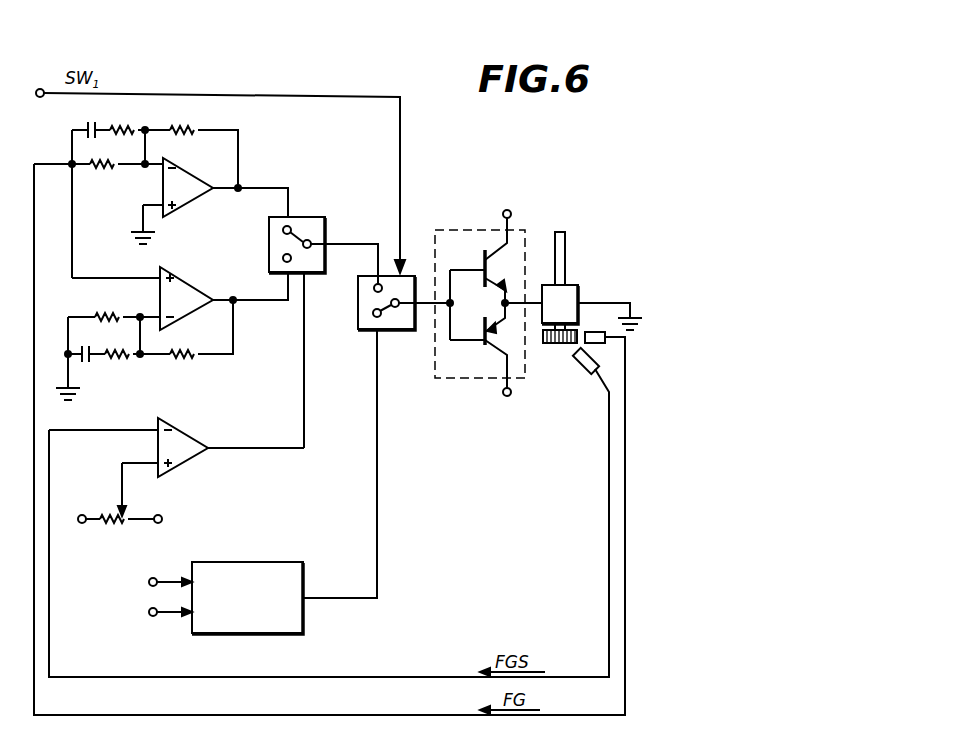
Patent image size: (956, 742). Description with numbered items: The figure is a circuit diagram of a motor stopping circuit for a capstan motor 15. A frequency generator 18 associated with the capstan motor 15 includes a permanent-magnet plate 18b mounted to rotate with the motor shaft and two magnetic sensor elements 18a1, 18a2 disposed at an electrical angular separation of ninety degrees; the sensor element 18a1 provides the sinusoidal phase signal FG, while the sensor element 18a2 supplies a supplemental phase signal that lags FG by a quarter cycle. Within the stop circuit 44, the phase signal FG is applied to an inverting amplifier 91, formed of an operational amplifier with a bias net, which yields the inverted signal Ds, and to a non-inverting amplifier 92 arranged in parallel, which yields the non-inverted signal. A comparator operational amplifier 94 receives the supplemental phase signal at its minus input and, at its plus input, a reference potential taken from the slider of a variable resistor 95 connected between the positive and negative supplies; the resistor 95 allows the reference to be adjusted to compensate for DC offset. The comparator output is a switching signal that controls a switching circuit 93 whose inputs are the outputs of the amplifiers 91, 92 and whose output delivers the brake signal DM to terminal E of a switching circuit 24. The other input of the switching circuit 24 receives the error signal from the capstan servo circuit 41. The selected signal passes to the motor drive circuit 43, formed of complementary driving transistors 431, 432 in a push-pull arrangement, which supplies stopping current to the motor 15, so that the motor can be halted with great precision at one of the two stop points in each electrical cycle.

The stop circuit 44 is at (334, 143).
The inverting amplifier 91 is at (122, 200).
The non-inverting amplifier 92 is at (122, 388).
The switching circuit 93 is at (318, 272).
The comparator operational amplifier 94 is at (190, 465).
The variable resistor 95 is at (114, 524).
The capstan servo circuit 41 is at (304, 622).
The switching circuit 24 is at (402, 330).
The motor drive circuit 43 is at (438, 378).
The driving transistor 431 is at (460, 230).
The driving transistor 432 is at (482, 350).
The capstan motor 15 is at (580, 292).
The frequency generator 18 is at (564, 402).
The magnetic sensor element 18a1 is at (597, 344).
The magnetic sensor element 18a2 is at (583, 372).
The permanent-magnet plate 18b is at (555, 344).